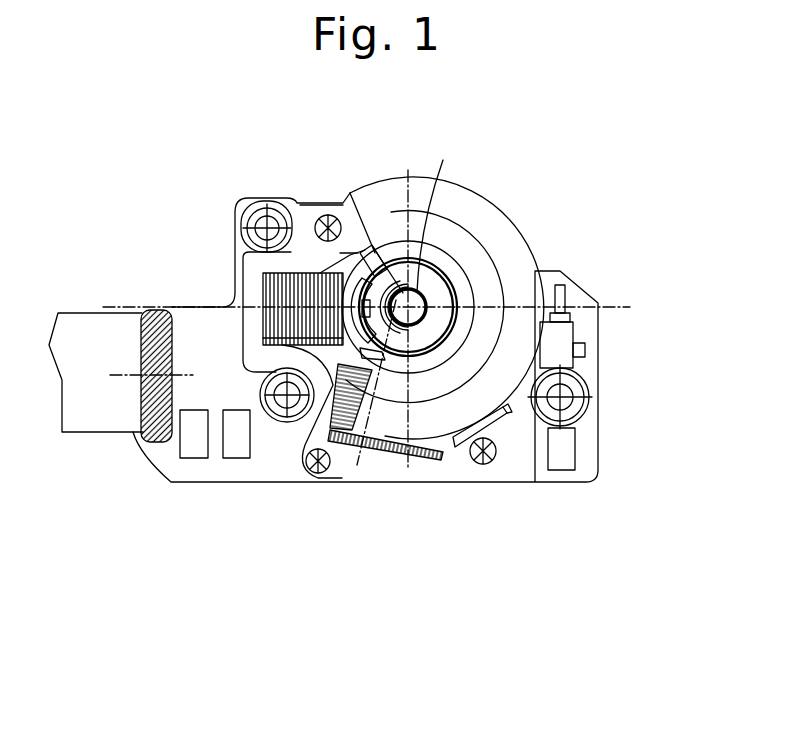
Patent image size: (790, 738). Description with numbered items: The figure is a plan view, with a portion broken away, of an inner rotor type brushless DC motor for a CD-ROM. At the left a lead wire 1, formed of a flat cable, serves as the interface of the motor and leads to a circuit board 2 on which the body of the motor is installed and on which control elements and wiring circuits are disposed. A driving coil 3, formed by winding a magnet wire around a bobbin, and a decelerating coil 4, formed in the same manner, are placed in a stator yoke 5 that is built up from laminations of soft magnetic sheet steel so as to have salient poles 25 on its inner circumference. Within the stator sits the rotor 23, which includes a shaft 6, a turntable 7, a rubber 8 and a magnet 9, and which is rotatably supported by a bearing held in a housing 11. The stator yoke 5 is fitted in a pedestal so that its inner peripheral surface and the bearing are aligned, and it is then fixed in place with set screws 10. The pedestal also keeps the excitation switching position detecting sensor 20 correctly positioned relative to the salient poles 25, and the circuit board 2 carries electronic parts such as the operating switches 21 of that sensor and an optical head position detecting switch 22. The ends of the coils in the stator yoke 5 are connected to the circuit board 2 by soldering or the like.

The lead wire 1 is at (70, 338).
The circuit board 2 is at (180, 327).
The driving coil 3 is at (278, 298).
The decelerating coil 4 is at (320, 272).
The stator yoke 5 is at (315, 210).
The shaft 6 is at (437, 297).
The turntable 7 is at (463, 237).
The rubber 8 is at (505, 232).
The magnet 9 is at (497, 240).
The set screws 10 is at (334, 218).
The housing 11 is at (390, 448).
The excitation switching position detecting sensor 20 is at (434, 180).
The operating switches 21 is at (237, 438).
The optical head position detecting switch 22 is at (555, 338).
The rotor 23 is at (512, 143).
The salient poles 25 is at (370, 244).